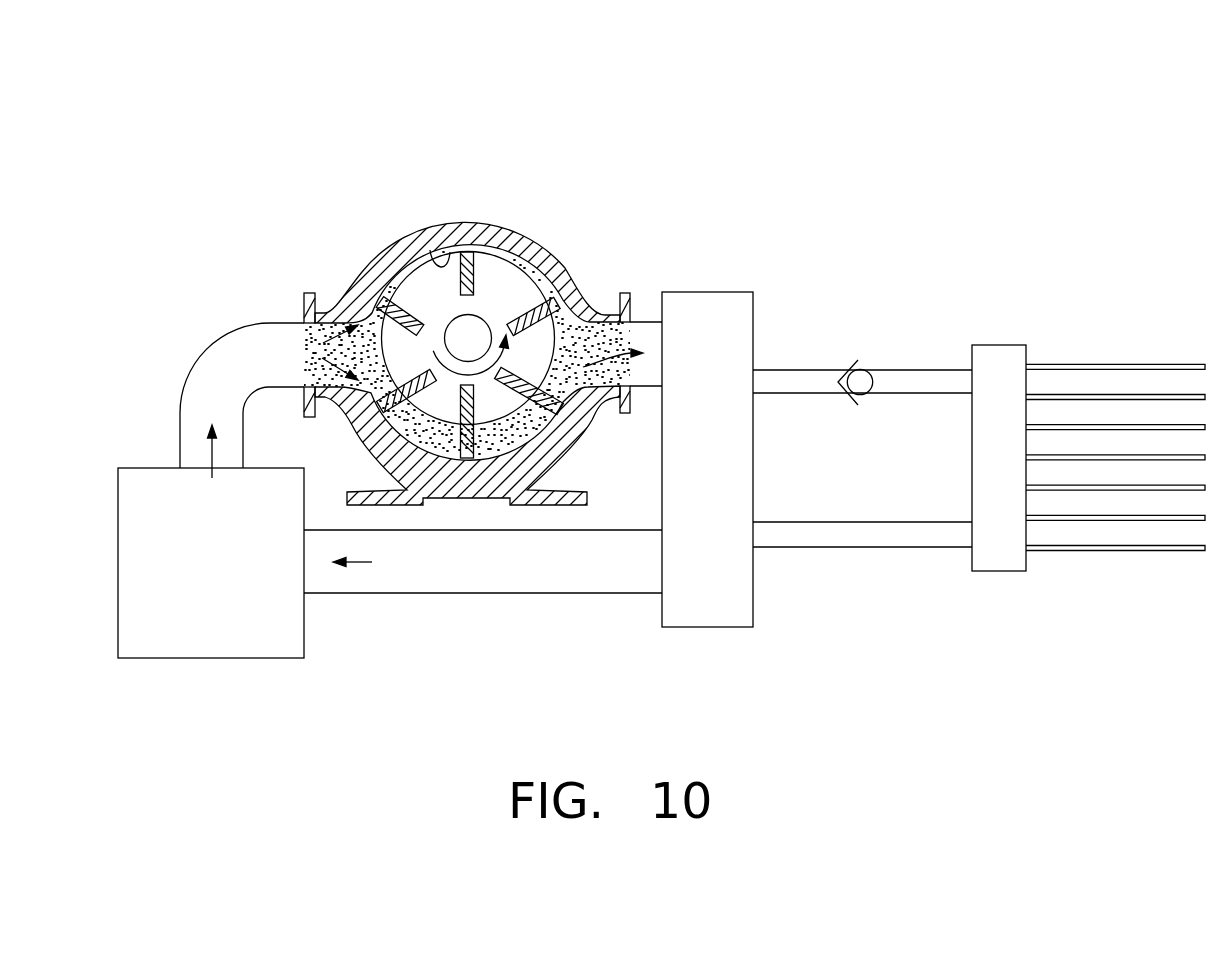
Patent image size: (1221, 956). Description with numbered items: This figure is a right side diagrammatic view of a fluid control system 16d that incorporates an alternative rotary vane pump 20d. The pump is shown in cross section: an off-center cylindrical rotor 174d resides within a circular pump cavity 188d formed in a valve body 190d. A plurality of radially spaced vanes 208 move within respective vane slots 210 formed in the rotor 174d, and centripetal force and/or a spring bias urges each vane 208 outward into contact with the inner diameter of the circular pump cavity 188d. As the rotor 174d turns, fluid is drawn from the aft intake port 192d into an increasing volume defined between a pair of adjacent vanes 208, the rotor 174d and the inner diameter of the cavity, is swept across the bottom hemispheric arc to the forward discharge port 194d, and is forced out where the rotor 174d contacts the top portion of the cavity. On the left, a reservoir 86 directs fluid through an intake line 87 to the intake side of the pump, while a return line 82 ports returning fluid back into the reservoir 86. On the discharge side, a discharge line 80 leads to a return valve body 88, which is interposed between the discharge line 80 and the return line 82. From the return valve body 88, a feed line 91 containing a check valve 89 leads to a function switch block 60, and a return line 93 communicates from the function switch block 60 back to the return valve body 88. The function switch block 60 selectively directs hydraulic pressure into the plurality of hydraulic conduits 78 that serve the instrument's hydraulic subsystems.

The fluid control system 16d is at (724, 137).
The rotary vane pump 20d is at (574, 241).
The off-center cylindrical rotor 174d is at (487, 287).
The circular pump cavity 188d is at (430, 250).
The valve body 190d is at (468, 214).
The aft (intake) port 192d is at (303, 320).
The forward (discharge) port 194d is at (622, 333).
The vane 208 is at (498, 382).
The vane slot 210 is at (503, 383).
The discharge line 80 is at (647, 322).
The return line 82 is at (568, 597).
The reservoir 86 is at (262, 658).
The intake line 87 is at (238, 330).
The return valve body 88 is at (702, 292).
The check valve 89 is at (873, 356).
The feed line 91 is at (904, 368).
The return line 93 is at (862, 547).
The function switch block 60 is at (999, 345).
The hydraulic conduits 78 is at (1074, 568).